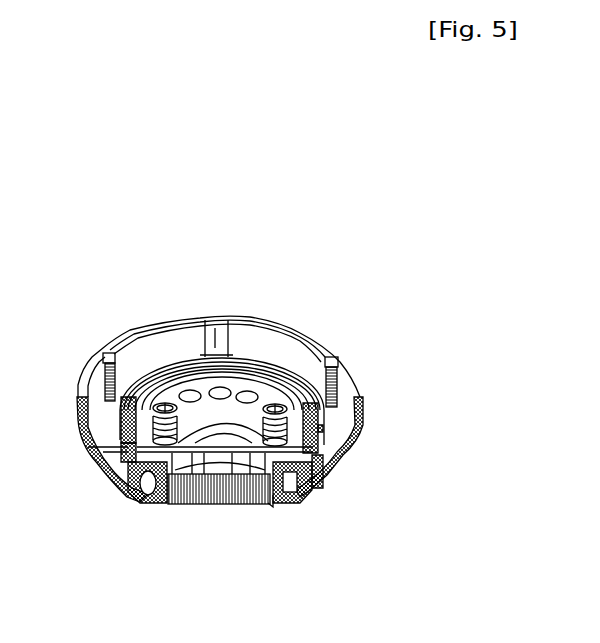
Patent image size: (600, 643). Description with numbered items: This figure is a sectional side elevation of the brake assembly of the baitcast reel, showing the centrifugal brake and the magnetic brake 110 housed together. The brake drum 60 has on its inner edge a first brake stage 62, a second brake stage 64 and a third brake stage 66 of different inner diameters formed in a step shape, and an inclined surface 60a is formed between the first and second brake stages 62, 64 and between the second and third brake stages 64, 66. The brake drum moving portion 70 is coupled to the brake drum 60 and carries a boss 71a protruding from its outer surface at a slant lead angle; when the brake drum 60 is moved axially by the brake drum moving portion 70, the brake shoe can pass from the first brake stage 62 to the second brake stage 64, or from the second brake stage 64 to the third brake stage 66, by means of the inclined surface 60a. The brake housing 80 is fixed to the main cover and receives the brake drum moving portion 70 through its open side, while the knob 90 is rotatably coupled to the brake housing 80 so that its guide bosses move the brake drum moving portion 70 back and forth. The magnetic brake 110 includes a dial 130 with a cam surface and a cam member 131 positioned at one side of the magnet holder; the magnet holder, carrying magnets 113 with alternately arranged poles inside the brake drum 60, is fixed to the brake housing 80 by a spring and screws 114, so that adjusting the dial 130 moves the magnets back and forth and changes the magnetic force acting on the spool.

The brake drum moving portion 70 is at (127, 340).
The boss 71a is at (107, 356).
The brake drum 60 is at (255, 355).
The inclined surface 60a is at (158, 377).
The first brake stage 62 is at (203, 353).
The second brake stage 64 is at (220, 357).
The magnetic brake 110 is at (196, 352).
The screws 114 is at (262, 372).
The third brake stage 66 is at (320, 415).
The brake housing 80 is at (360, 452).
The knob 90 is at (210, 497).
The magnets 113 is at (157, 502).
The dial 130 is at (297, 497).
The cam member 131 is at (272, 507).